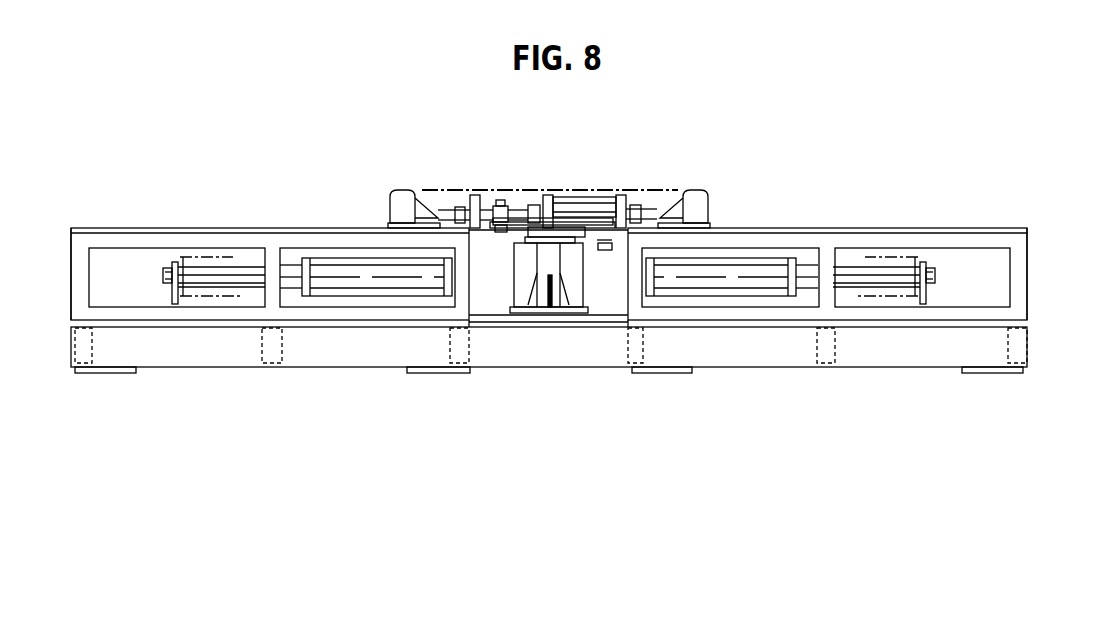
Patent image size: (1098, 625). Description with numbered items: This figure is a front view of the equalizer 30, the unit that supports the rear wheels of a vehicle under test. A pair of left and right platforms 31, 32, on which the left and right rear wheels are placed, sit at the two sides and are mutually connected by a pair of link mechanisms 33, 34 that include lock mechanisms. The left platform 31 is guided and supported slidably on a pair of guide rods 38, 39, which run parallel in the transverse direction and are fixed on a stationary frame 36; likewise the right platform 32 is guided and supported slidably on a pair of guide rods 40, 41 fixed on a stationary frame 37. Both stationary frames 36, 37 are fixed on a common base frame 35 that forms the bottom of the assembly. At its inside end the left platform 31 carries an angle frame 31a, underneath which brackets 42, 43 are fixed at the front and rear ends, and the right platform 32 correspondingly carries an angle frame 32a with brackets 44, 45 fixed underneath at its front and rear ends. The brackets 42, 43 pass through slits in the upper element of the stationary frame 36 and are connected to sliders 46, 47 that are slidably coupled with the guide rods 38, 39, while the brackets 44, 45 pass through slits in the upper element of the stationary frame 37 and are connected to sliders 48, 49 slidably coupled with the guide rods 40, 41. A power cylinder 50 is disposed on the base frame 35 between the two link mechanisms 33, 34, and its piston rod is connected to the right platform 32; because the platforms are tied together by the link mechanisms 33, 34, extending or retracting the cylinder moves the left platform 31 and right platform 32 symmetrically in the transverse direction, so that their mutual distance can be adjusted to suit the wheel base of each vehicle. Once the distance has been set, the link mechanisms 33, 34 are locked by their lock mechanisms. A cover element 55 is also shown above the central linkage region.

The equalizer 30 is at (980, 154).
The left platform 31 is at (257, 228).
The right platform 32 is at (841, 228).
The angle frame 31a is at (407, 190).
The angle frame 32a is at (700, 190).
The link mechanism 33 is at (547, 155).
The link mechanism 34 is at (562, 188).
The base frame 35 is at (540, 355).
The stationary frame 36 is at (77, 285).
The stationary frame 37 is at (1020, 290).
The guide rod 38 is at (214, 362).
The guide rod 39 is at (230, 278).
The guide rod 40 is at (884, 362).
The guide rod 41 is at (860, 278).
The bracket 42 is at (366, 311).
The bracket 43 is at (398, 248).
The bracket 44 is at (732, 311).
The bracket 45 is at (712, 250).
The slider 46 is at (362, 366).
The slider 47 is at (365, 288).
The slider 48 is at (736, 366).
The slider 49 is at (735, 288).
The power cylinder 50 is at (592, 192).
The cover element 55 is at (497, 188).